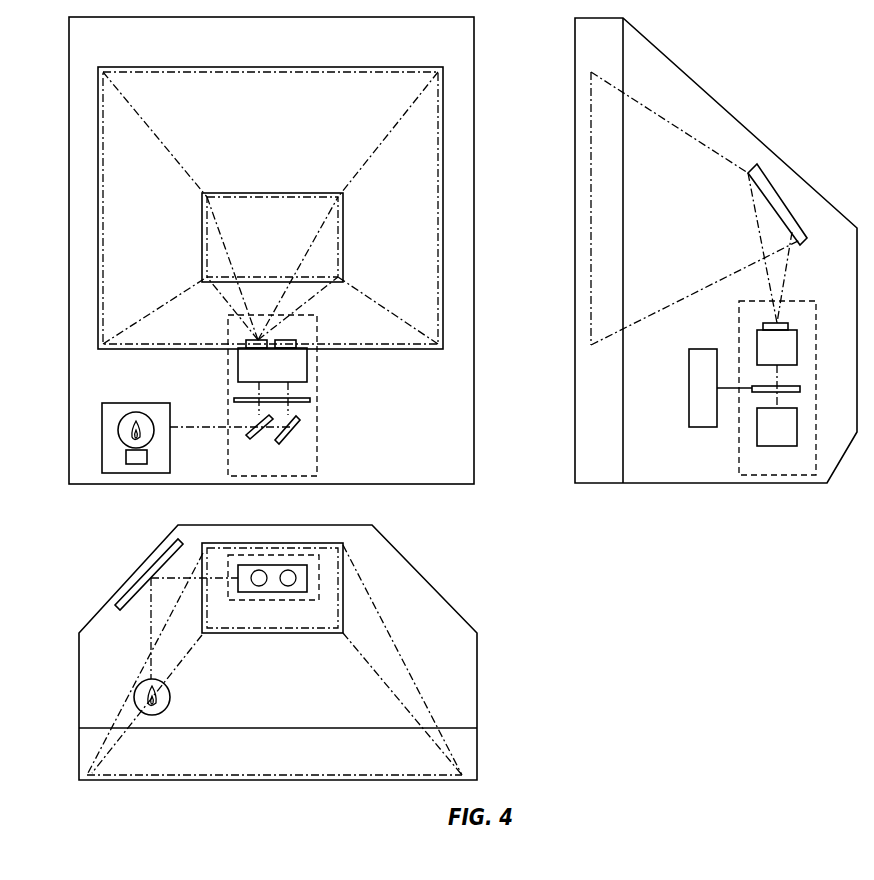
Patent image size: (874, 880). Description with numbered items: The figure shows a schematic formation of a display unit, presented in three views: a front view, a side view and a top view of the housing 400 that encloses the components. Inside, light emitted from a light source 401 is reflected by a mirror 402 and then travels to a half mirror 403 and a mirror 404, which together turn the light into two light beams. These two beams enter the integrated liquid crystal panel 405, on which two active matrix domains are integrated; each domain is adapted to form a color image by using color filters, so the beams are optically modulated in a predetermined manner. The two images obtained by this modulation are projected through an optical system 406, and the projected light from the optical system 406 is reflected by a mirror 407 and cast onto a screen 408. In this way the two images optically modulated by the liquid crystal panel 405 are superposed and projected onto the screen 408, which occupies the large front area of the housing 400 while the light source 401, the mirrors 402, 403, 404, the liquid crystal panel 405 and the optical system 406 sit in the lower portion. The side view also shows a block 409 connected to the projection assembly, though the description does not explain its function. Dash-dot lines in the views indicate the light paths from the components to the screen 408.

The housing 400 is at (415, 484).
The light source 401 is at (133, 412).
The mirror 402 is at (142, 473).
The half mirror 403 is at (246, 437).
The mirror 404 is at (290, 430).
The liquid crystal panel 405 is at (310, 400).
The optical system 406 is at (307, 362).
The mirror 407 is at (773, 190).
The screen 408 is at (591, 240).
The controller 409 is at (703, 428).